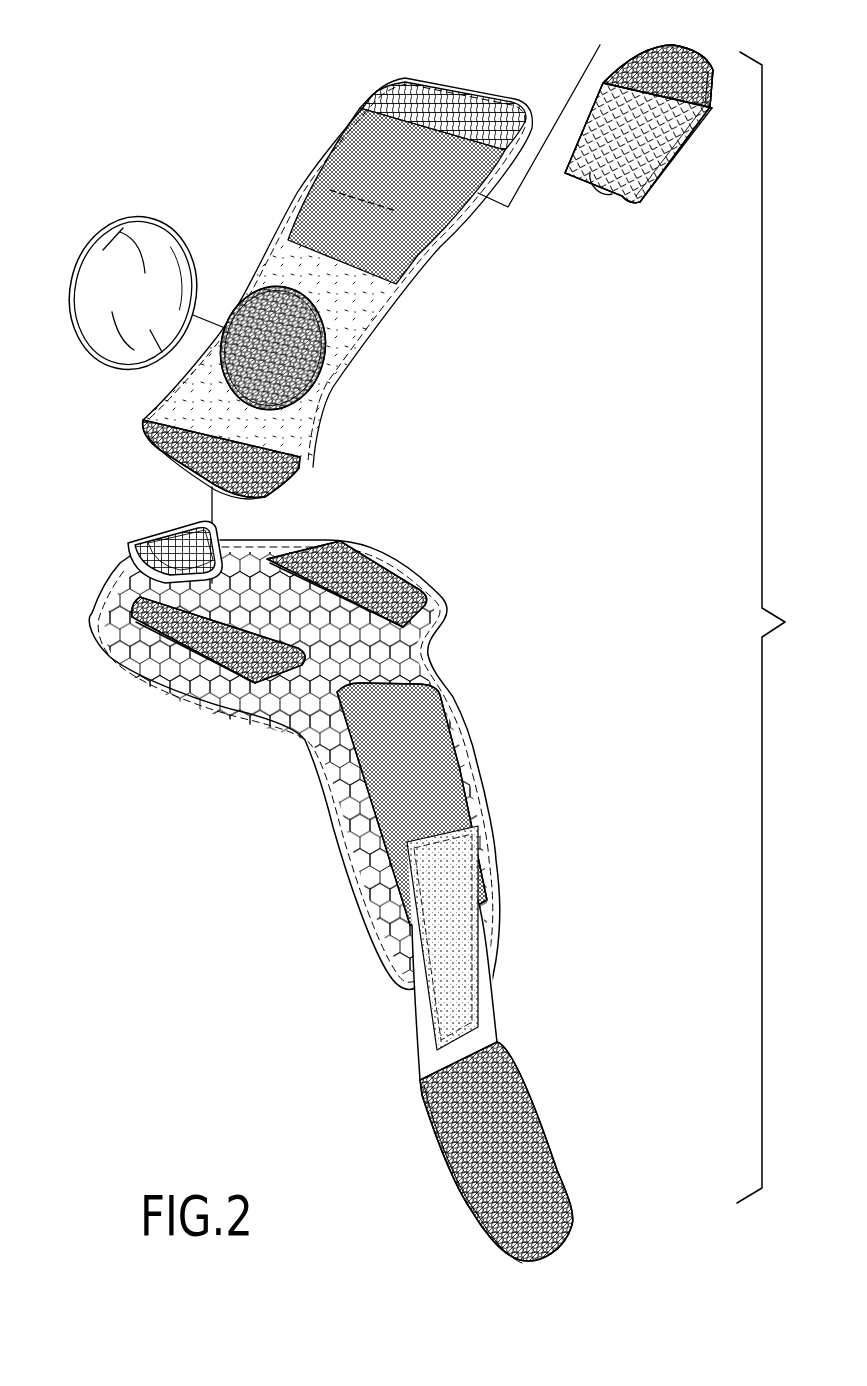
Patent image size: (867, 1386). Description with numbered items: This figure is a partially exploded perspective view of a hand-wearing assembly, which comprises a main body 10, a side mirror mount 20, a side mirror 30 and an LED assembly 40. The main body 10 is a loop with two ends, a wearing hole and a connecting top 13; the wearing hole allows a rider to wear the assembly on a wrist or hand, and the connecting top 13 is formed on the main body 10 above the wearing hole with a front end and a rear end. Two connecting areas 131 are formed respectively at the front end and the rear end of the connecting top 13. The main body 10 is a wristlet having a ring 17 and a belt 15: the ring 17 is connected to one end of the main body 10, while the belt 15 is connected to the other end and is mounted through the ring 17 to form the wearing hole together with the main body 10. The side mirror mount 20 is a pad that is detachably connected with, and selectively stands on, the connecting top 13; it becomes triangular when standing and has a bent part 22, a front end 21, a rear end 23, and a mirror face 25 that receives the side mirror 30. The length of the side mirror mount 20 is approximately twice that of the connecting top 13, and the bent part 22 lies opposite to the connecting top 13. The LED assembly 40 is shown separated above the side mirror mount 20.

The main body 10 is at (486, 609).
The connecting top 13 is at (297, 698).
The connecting areas 131 is at (188, 652).
The belt 15 is at (487, 1033).
The ring 17 is at (127, 542).
The side mirror mount 20 is at (450, 325).
The front end 21 is at (463, 98).
The bent part 22 is at (250, 219).
The rear end 23 is at (262, 475).
The mirror face 25 is at (307, 363).
The side mirror 30 is at (93, 270).
The LED assembly 40 is at (660, 157).